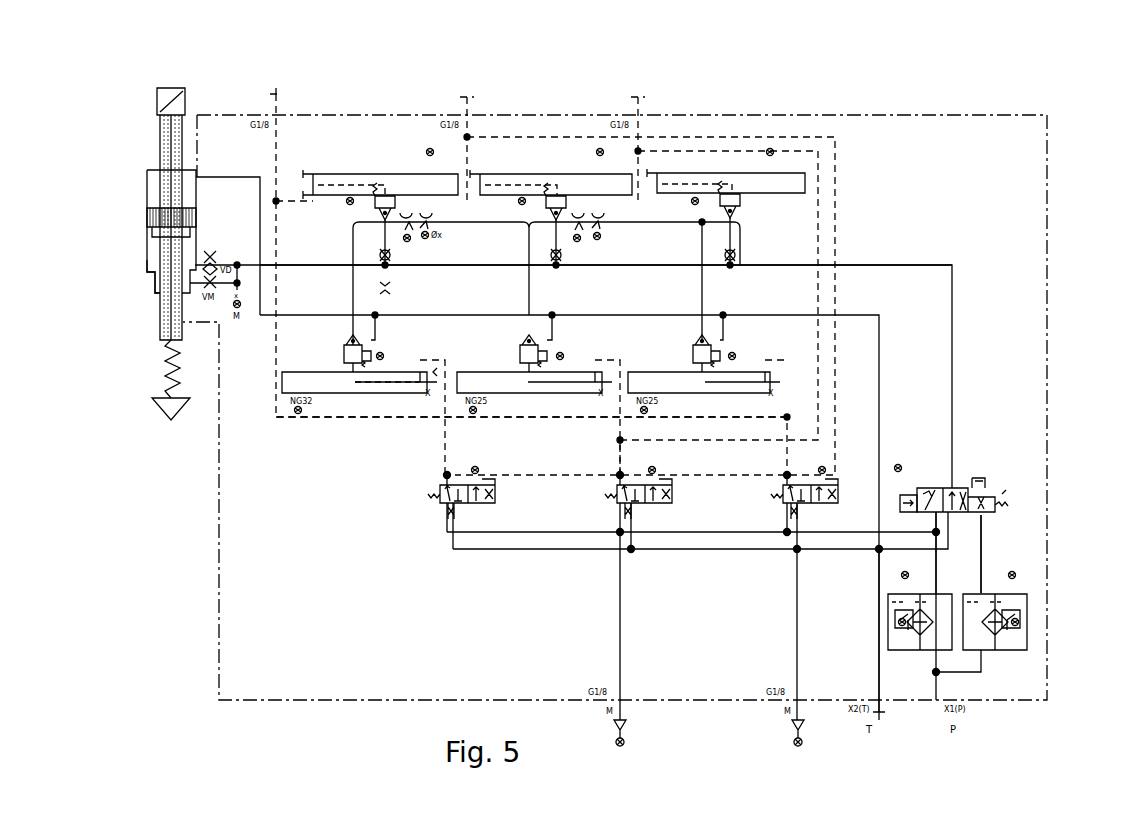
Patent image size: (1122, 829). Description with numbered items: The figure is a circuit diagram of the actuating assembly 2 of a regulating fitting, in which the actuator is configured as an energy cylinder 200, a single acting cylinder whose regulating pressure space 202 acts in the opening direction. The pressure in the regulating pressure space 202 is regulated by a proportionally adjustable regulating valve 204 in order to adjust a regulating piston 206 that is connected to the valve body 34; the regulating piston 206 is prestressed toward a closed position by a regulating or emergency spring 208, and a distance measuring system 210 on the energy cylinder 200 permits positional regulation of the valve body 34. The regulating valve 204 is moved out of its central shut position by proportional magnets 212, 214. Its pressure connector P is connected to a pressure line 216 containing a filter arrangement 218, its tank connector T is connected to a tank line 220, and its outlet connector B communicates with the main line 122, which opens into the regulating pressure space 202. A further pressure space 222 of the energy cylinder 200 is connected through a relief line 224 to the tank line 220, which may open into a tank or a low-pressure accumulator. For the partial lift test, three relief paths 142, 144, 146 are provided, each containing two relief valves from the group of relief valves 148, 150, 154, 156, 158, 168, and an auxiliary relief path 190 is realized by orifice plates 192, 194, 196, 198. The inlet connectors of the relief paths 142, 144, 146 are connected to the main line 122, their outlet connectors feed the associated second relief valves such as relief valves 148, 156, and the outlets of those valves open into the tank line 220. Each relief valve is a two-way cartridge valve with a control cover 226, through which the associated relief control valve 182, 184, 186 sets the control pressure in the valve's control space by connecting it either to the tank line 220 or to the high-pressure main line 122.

The hydraulic control system 2 is at (735, 112).
The valve body 34 is at (160, 410).
The main line 122 is at (888, 265).
The relief path 142 is at (340, 245).
The relief path 144 is at (515, 248).
The relief path 146 is at (690, 245).
The relief valve 148 is at (340, 350).
The relief valve 150 is at (410, 212).
The relief valve 154 is at (582, 212).
The relief valve 156 is at (720, 352).
The relief valve 158 is at (549, 348).
The third pilot check valve 168 is at (740, 210).
The relief control valve 182 is at (428, 512).
The relief control valve 184 is at (600, 512).
The relief control valve 186 is at (765, 512).
The auxiliary relief path 190 is at (485, 228).
The orifice plate 192 is at (405, 226).
The orifice plate 194 is at (435, 236).
The orifice plate 196 is at (585, 240).
The orifice plate 198 is at (612, 236).
The energy cylinder 200 is at (126, 260).
The regulating pressure space 202 is at (145, 268).
The regulating valve 204 is at (948, 477).
The regulating piston 206 is at (150, 222).
The regulating or emergency spring 208 is at (155, 358).
The distance measuring system 210 is at (150, 108).
The proportional magnet 212 is at (985, 525).
The proportional magnet 214 is at (915, 488).
The pressure line 216 is at (938, 678).
The filter arrangement 218 is at (1030, 622).
The tank line 220 is at (878, 683).
The further pressure space 222 is at (150, 185).
The relief line 224 is at (205, 175).
The control cover 226 is at (345, 395).